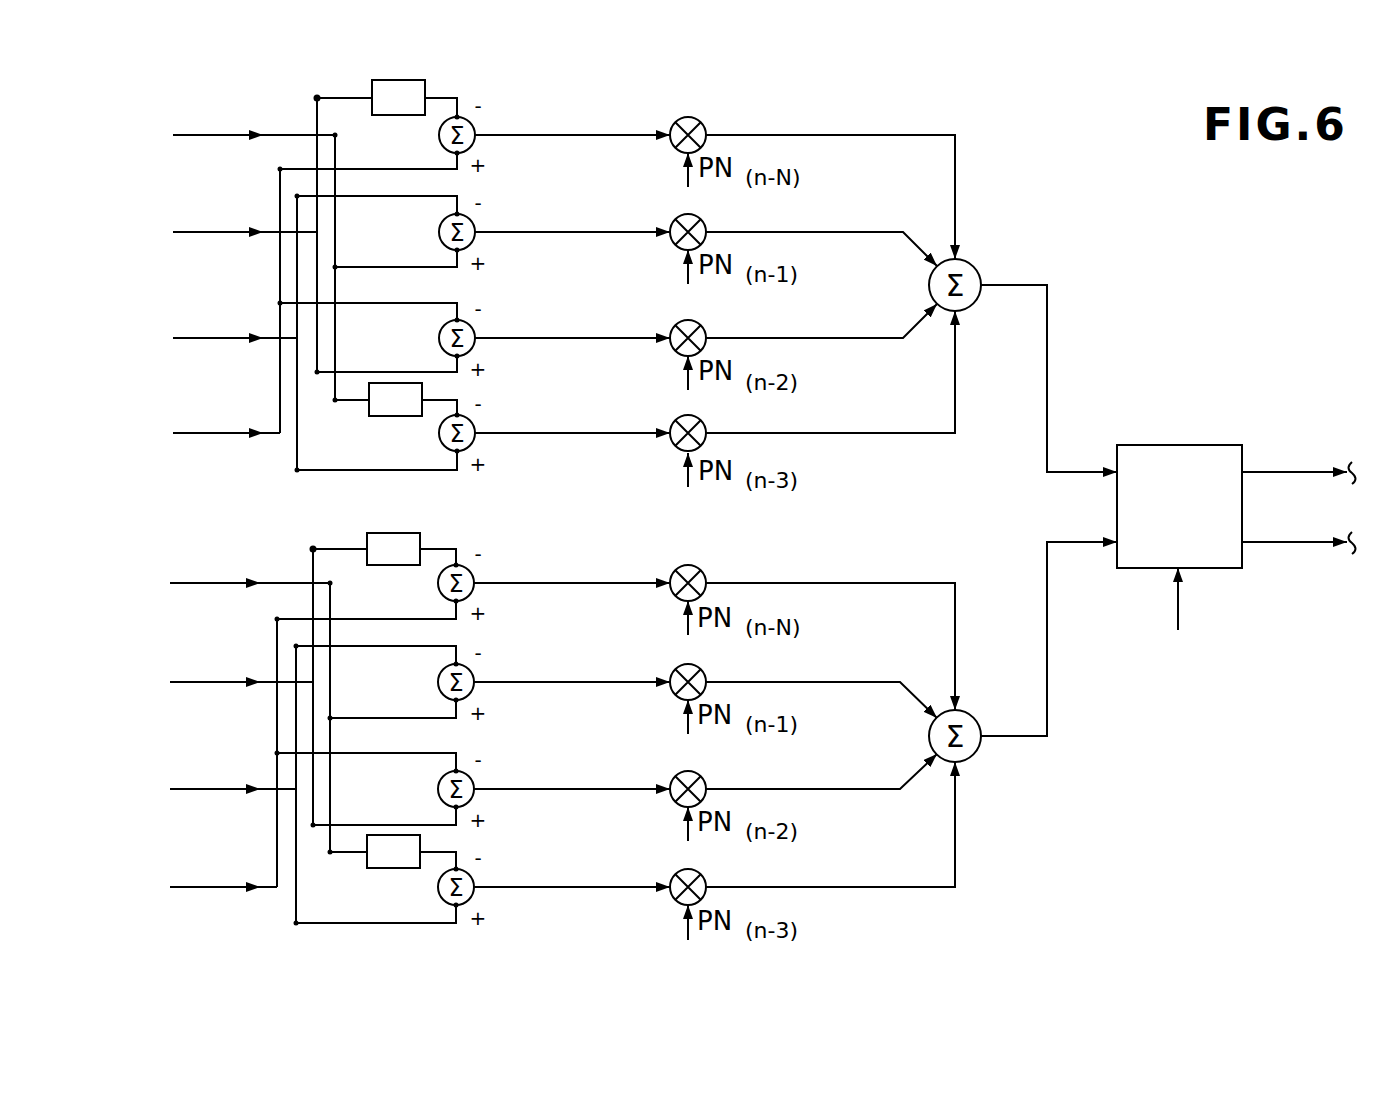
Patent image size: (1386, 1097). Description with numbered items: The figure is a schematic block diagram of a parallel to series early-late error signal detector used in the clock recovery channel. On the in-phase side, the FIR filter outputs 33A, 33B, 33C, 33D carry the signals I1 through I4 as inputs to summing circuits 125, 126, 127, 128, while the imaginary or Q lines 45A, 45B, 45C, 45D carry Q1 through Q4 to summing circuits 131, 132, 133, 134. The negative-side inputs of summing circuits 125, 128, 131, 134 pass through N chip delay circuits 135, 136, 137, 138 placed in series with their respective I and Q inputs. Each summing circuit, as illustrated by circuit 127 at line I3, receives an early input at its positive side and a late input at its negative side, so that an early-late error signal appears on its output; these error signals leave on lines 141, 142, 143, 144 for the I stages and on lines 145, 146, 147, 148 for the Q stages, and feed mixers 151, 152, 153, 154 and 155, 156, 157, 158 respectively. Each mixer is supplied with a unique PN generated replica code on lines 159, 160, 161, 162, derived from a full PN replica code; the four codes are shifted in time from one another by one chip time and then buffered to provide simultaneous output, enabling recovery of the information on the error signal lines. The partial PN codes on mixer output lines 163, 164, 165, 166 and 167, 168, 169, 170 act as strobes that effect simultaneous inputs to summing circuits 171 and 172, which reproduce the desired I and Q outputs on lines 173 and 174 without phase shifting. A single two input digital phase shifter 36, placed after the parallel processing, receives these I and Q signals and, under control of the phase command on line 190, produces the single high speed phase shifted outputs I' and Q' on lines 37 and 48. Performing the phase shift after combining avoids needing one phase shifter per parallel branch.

The FIR filter output line (I1) 33A is at (183, 133).
The FIR filter output line (I2) 33B is at (183, 230).
The FIR filter output line (I3) 33C is at (183, 336).
The FIR filter output line (I4) 33D is at (183, 431).
The imaginary (Q) line (Q1) 45A is at (183, 581).
The imaginary (Q) line (Q2) 45B is at (183, 680).
The imaginary (Q) line (Q3) 45C is at (183, 787).
The imaginary (Q) line (Q4) 45D is at (183, 885).
The summing circuit 125 is at (475, 125).
The summing circuit 126 is at (474, 226).
The summing circuit 127 is at (474, 332).
The summing circuit 128 is at (474, 428).
The summing circuit 131 is at (475, 573).
The summing circuit 132 is at (474, 676).
The summing circuit 133 is at (474, 783).
The summing circuit 134 is at (474, 881).
The N chip delay circuit 135 is at (412, 116).
The N chip delay circuit 136 is at (397, 417).
The N chip delay circuit 137 is at (410, 566).
The N chip delay circuit 138 is at (397, 869).
The early-late error signal output line 141 is at (580, 135).
The early-late error signal output line 142 is at (560, 232).
The early-late error signal output line 143 is at (560, 338).
The early-late error signal output line 144 is at (562, 433).
The early-late error signal output line 145 is at (580, 583).
The early-late error signal output line 146 is at (560, 682).
The early-late error signal output line 147 is at (560, 789).
The early-late error signal output line 148 is at (562, 887).
The mixer 151 is at (701, 120).
The mixer 152 is at (706, 226).
The mixer 153 is at (706, 330).
The mixer 154 is at (706, 425).
The mixer 155 is at (701, 568).
The mixer 156 is at (706, 676).
The mixer 157 is at (706, 782).
The mixer 158 is at (706, 877).
The PN replica code line 159 is at (688, 182).
The PN replica code line 160 is at (688, 270).
The PN replica code line 161 is at (688, 385).
The PN replica code line 162 is at (688, 478).
The mixer output line 163 is at (826, 135).
The mixer output line 164 is at (826, 232).
The mixer output line 165 is at (826, 338).
The mixer output line 166 is at (826, 433).
The mixer output line 167 is at (826, 583).
The mixer output line 168 is at (826, 682).
The mixer output line 169 is at (826, 789).
The mixer output line 170 is at (826, 887).
The summing circuit 171 is at (970, 262).
The summing circuit 172 is at (968, 760).
The I output line 173 is at (1047, 365).
The Q output line 174 is at (1047, 690).
The two input digital phase shifter 36 is at (1178, 445).
The phase shifted output line (I') 37 is at (1313, 465).
The phase shifted output line (Q') 48 is at (1302, 545).
The phase command line 190 is at (1178, 615).